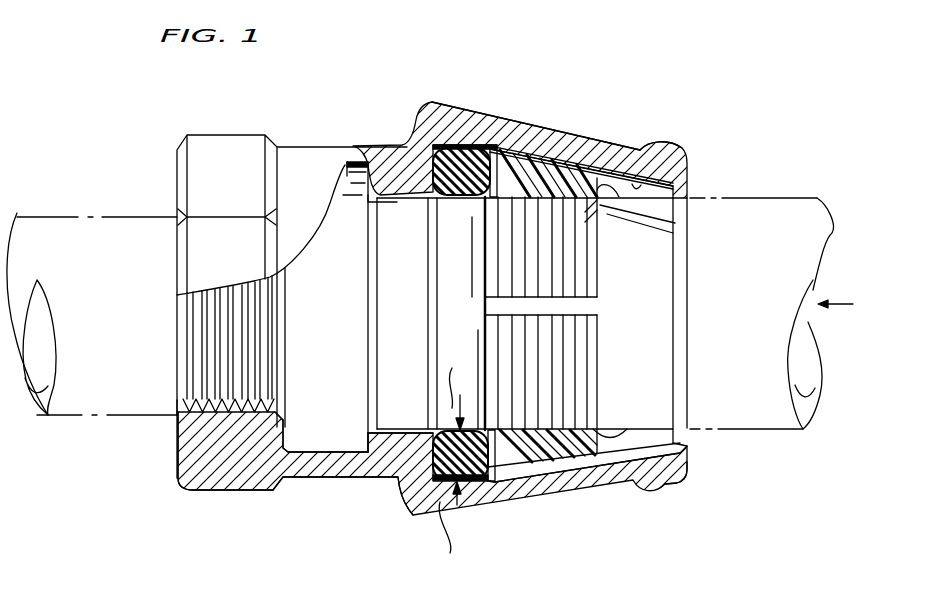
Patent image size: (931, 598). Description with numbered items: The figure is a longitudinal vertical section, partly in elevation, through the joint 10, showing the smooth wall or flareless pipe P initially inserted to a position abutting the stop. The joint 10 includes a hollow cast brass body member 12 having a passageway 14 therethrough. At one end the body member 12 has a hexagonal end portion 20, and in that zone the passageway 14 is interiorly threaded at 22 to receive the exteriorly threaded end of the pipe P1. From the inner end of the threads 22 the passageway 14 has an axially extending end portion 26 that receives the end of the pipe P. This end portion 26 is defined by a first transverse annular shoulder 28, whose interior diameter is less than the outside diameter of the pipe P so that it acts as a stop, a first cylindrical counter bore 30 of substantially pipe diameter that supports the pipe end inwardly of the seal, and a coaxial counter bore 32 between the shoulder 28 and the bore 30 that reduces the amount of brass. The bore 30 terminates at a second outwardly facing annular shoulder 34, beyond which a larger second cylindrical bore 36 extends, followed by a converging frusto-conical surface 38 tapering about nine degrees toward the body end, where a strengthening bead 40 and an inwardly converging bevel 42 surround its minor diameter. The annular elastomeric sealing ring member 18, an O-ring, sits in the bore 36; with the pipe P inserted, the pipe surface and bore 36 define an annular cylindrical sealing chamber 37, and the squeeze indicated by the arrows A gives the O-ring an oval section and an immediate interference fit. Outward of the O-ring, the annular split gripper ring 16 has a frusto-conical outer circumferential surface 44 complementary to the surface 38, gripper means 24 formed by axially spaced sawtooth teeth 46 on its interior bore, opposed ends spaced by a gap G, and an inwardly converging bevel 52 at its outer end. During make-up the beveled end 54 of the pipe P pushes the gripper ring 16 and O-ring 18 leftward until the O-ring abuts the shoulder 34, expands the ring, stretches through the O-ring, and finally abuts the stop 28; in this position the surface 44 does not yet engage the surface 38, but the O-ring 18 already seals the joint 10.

The joint 10 is at (542, 103).
The hollow body member 12 is at (572, 138).
The passageway 14 is at (234, 345).
The annular split gripper ring 16 is at (617, 193).
The annular elastomeric sealing ring member 18 is at (455, 198).
The hexagonal end portion 20 is at (213, 135).
The interior threads 22 is at (185, 399).
The gripper means 24 is at (572, 416).
The axially extending end portion 26 is at (412, 318).
The first annular shoulder 28 is at (290, 450).
The first cylindrical counter bore 30 is at (393, 430).
The coaxial counter bore 32 is at (343, 453).
The second annular shoulder 34 is at (441, 145).
The second cylindrical bore 36 is at (493, 146).
The annular cylindrical sealing chamber 37 is at (488, 475).
The frusto-conical surface 38 is at (645, 178).
The strengthening bead 40 is at (668, 484).
The inwardly converging bevel 42 is at (672, 447).
The outer circumferential surface 44 is at (560, 455).
The teeth 46 is at (538, 428).
The inwardly converging bevel 52 is at (597, 437).
The beveled end 54 is at (283, 425).
The pipe P is at (712, 197).
The pipe P1 is at (55, 212).
The gap G is at (590, 307).
The arrows A is at (449, 461).